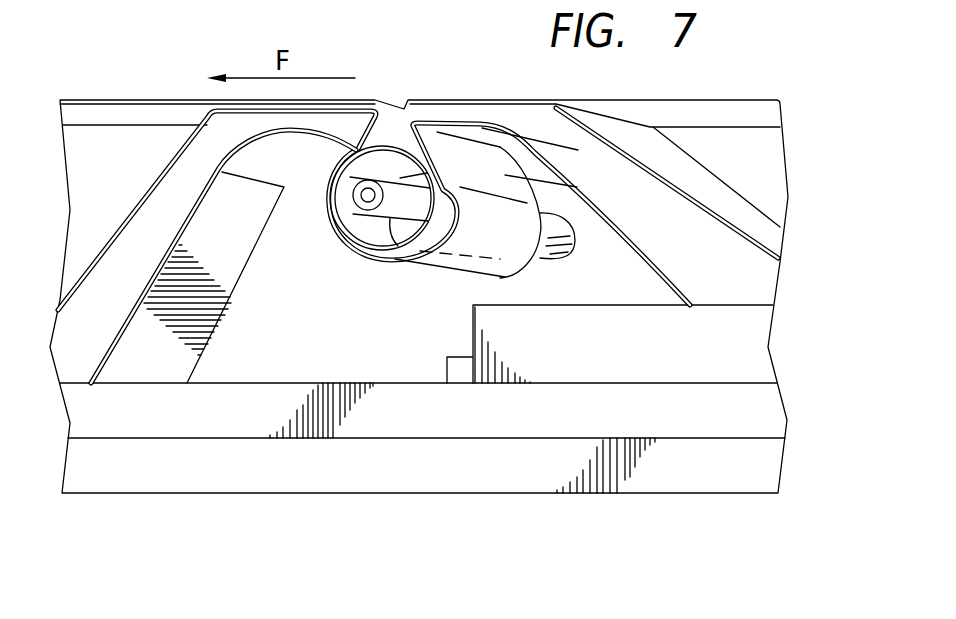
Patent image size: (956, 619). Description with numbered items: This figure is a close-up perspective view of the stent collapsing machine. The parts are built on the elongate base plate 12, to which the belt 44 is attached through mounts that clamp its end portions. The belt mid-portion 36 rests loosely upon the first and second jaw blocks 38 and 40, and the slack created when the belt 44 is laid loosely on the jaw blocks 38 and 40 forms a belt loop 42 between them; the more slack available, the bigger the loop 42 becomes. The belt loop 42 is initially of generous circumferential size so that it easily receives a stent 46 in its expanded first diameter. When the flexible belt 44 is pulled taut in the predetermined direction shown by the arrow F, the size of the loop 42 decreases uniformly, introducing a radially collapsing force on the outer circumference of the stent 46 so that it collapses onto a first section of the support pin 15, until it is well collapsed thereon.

The elongate base plate 12 is at (418, 467).
The support pin 15 is at (577, 240).
The belt mid-portion 36 is at (503, 258).
The first jaw block 38 is at (143, 227).
The second jaw block 40 is at (693, 180).
The belt loop 42 is at (577, 187).
The belt 44 is at (702, 117).
The stent 46 is at (430, 238).